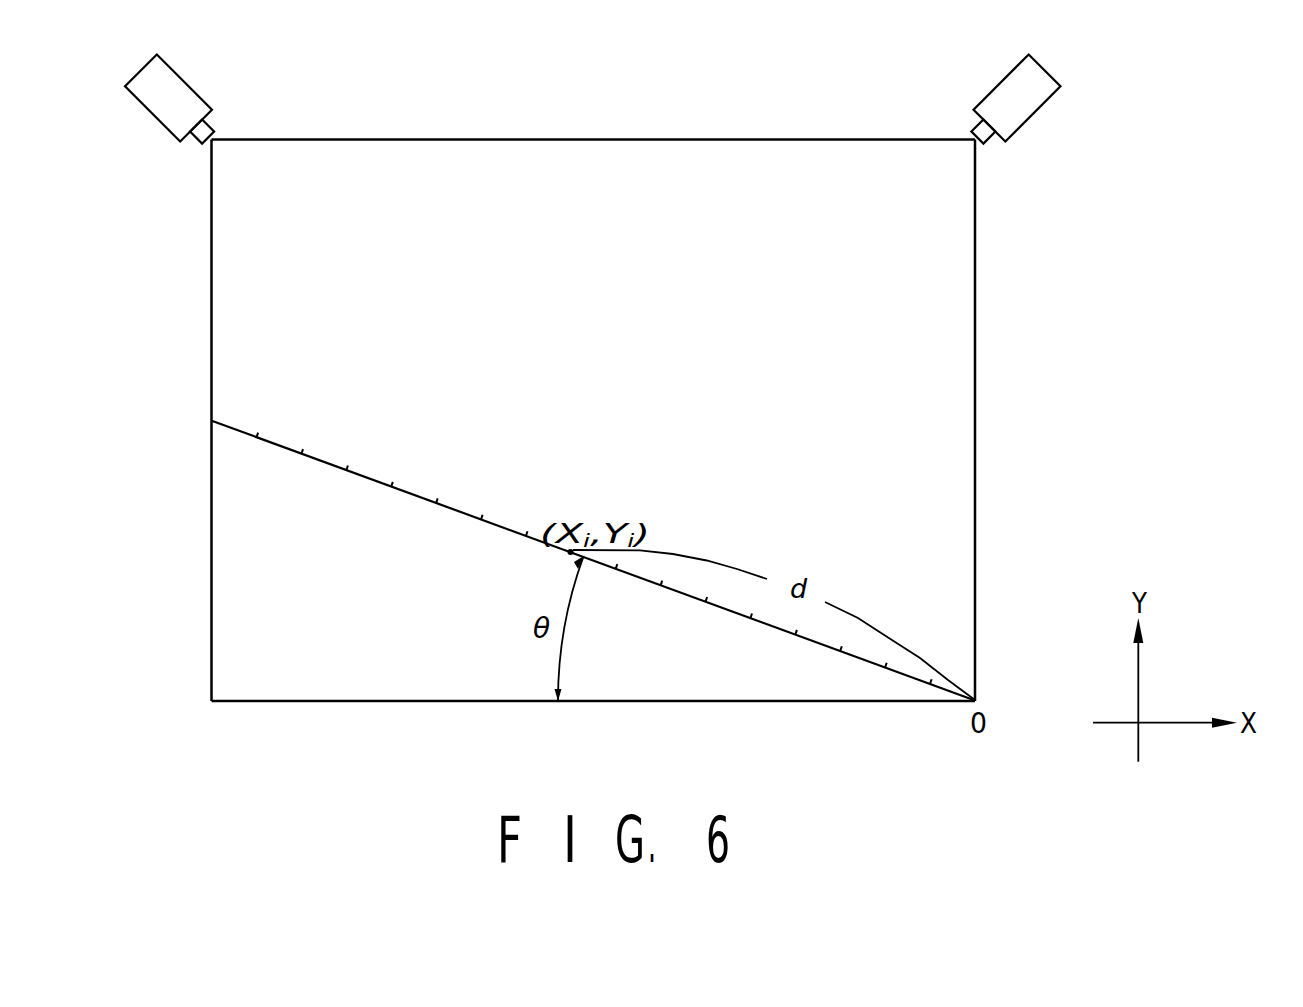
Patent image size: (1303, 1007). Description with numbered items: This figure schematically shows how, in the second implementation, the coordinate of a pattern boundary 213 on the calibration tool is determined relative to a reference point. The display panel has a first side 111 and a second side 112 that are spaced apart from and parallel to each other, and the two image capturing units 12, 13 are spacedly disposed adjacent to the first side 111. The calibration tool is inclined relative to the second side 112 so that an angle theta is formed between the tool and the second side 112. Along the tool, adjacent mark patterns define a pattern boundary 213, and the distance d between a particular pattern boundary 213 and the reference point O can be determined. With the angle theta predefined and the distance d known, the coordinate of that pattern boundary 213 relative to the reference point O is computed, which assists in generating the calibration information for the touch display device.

The image capturing unit 12 is at (1033, 113).
The image capturing unit 13 is at (153, 113).
The first side 111 is at (535, 139).
The second side 112 is at (733, 701).
The pattern boundary 213 is at (568, 553).